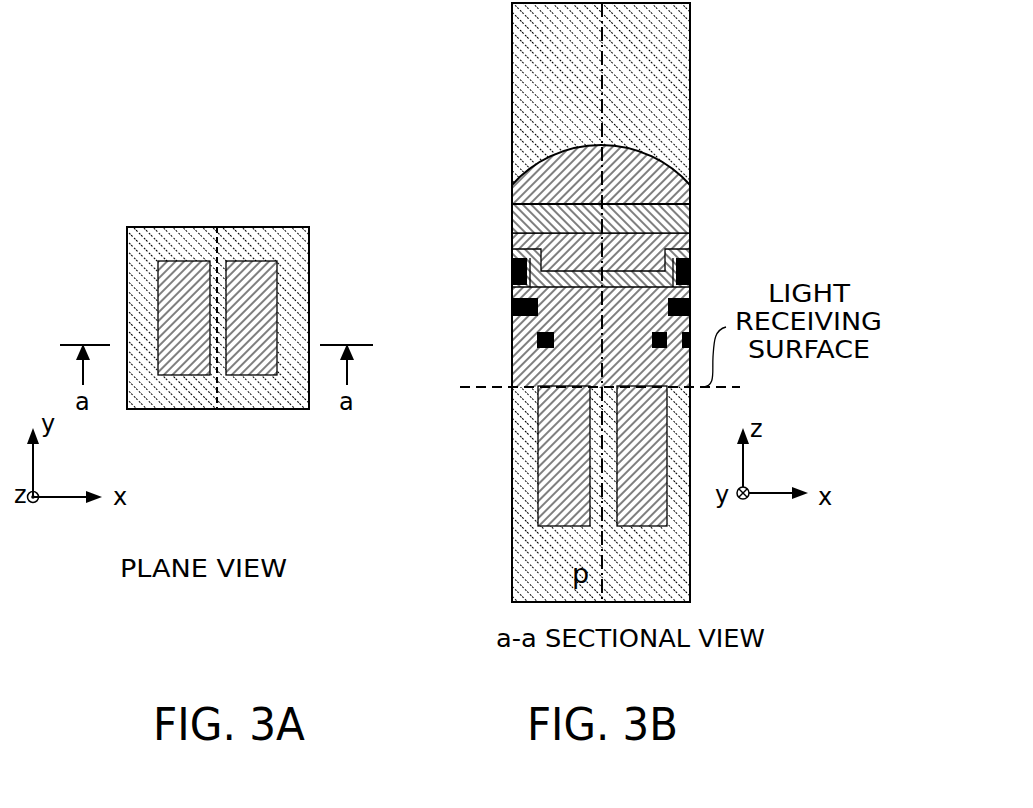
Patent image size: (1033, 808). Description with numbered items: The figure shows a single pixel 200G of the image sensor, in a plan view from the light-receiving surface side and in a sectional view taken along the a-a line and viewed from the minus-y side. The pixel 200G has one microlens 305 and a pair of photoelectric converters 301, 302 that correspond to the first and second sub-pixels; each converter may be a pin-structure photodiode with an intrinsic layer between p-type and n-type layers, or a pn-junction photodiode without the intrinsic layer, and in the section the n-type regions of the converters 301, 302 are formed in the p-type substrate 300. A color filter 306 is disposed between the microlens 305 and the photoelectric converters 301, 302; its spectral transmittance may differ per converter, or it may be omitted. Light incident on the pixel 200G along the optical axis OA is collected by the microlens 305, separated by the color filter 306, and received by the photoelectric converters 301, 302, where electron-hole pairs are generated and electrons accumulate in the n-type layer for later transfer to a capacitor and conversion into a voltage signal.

In FIG. 3A, the pixel 200G is at (218, 339).
In FIG. 3B, the semiconductor substrate 300 is at (540, 553).
In FIG. 3A, the photoelectric converter 301 is at (171, 358).
In FIG. 3B, the photoelectric converter 301 is at (558, 488).
In FIG. 3A, the photoelectric converter 302 is at (257, 358).
In FIG. 3B, the photoelectric converter 302 is at (652, 505).
In FIG. 3B, the microlens 305 is at (664, 178).
In FIG. 3B, the color filter 306 is at (668, 211).
In FIG. 3B, the optical axis OA is at (602, 117).